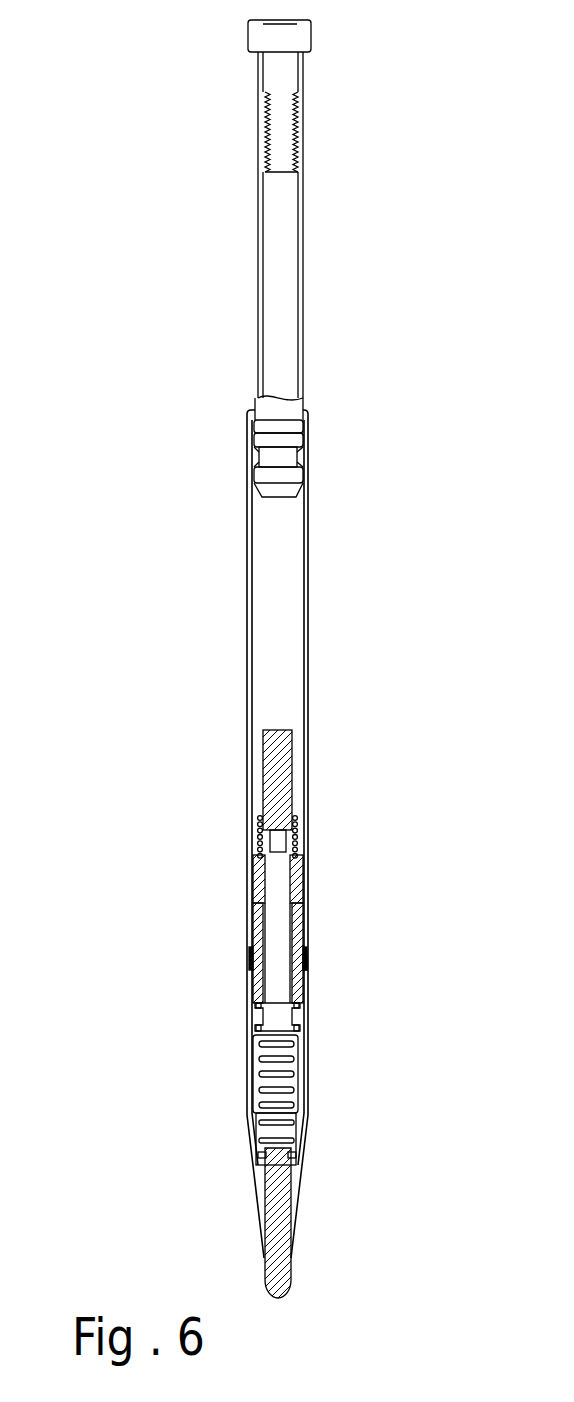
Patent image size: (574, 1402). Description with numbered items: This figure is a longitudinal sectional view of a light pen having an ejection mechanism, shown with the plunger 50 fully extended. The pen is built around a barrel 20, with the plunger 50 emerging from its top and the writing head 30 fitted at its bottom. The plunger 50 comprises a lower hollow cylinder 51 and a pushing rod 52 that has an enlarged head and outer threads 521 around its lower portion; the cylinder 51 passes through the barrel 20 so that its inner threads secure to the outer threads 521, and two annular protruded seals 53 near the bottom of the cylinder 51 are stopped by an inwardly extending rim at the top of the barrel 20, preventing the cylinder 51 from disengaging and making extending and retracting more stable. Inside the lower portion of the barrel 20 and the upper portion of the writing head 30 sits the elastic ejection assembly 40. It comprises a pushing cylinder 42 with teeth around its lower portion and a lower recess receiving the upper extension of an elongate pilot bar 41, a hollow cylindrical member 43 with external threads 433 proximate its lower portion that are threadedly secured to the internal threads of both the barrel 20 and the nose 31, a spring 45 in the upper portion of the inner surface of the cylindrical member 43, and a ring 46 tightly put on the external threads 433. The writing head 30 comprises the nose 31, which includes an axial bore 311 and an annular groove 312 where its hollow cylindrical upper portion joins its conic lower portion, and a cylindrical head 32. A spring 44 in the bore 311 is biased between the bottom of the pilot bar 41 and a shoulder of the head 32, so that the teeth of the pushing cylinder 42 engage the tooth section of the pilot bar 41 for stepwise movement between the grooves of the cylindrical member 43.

The barrel 20 is at (308, 640).
The plunger 50 is at (128, 40).
The pushing rod 52 is at (260, 40).
The lower hollow cylinder 51 is at (262, 232).
The outer threads 521 is at (263, 145).
The annular protruded seals 53 is at (262, 478).
The elastic ejection assembly 40 is at (180, 795).
The pushing cylinder 42 is at (262, 797).
The spring 45 is at (257, 845).
The hollow cylindrical member 43 is at (255, 890).
The elongate pilot bar 41 is at (255, 1006).
The external threads 433 is at (306, 932).
The ring 46 is at (306, 958).
The spring 44 is at (262, 1042).
The axial bore 311 is at (262, 1085).
The annular groove 312 is at (306, 1124).
The writing head 30 is at (185, 1182).
The nose 31 is at (262, 1183).
The cylindrical head 32 is at (268, 1252).